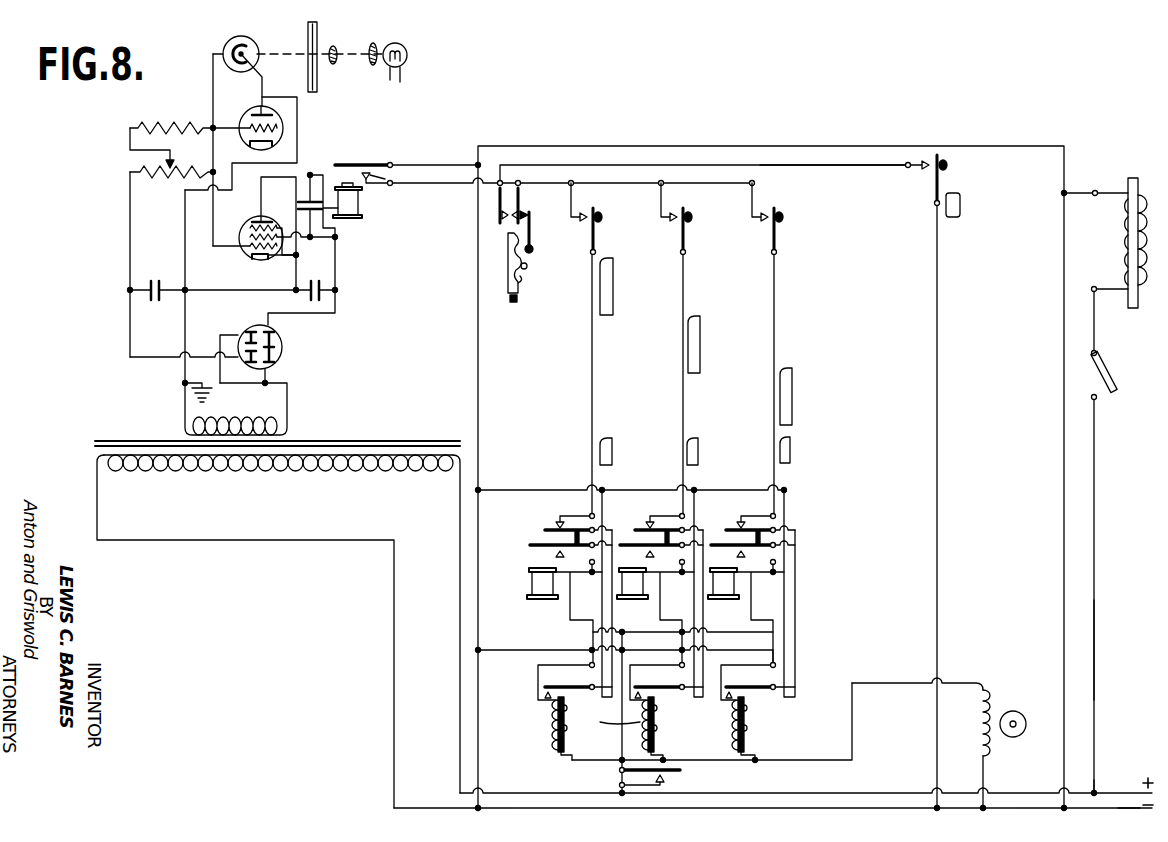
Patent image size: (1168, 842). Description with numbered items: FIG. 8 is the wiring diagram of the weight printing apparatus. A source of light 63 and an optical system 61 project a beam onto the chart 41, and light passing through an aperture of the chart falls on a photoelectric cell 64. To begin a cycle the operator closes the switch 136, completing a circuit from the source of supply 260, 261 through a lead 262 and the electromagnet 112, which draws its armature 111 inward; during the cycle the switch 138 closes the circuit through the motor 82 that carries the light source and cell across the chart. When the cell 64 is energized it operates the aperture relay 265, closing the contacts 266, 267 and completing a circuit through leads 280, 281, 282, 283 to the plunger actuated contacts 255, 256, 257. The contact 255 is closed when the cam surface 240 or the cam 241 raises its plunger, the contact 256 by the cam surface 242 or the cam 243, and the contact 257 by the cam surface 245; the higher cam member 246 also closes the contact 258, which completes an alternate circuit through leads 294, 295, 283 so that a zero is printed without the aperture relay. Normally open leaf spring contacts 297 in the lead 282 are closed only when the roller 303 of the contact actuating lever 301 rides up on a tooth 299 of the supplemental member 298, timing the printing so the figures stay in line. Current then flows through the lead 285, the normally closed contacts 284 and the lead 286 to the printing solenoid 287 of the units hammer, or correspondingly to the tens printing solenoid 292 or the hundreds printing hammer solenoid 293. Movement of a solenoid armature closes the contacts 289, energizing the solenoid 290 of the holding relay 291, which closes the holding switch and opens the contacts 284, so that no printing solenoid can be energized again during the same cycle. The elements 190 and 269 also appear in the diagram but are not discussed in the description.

The photoelectric cell 64 is at (224, 47).
The chart 41 is at (308, 35).
The optical system 61 is at (371, 65).
The source of light 63 is at (408, 55).
The relay 265 is at (360, 218).
The contact 266 is at (339, 163).
The contact 267 is at (395, 176).
The lead 281 is at (460, 172).
The lead 282 is at (450, 193).
The lead 283 is at (537, 186).
The leaf spring contacts 297 is at (505, 230).
The contact actuating lever 301 is at (532, 260).
The roller 303 is at (525, 268).
The cam 190 is at (508, 278).
The teeth 299 is at (521, 283).
The supplemental member 298 is at (513, 302).
The leaf spring contact switch 255 is at (589, 215).
The contact 256 is at (679, 215).
The contact 257 is at (771, 196).
The lead 295 is at (853, 166).
The contact 258 is at (934, 172).
The higher cam member 246 is at (960, 210).
The armature 111 is at (1126, 184).
The electromagnet 112 is at (1126, 241).
The switch 136 is at (1113, 377).
The cam surface 240 is at (613, 287).
The cam 241 is at (612, 450).
The cam surface 242 is at (700, 342).
The cam 243 is at (698, 450).
The cam surface 245 is at (792, 397).
The lead 285 is at (592, 386).
The lead 294 is at (938, 398).
The lead 280 is at (479, 582).
The normally closed contacts 284 is at (556, 520).
The lead 286 is at (612, 533).
The holding relay 291 is at (555, 553).
The solenoid 290 is at (553, 587).
The contacts 289 is at (551, 694).
The solenoid 287 is at (552, 727).
The printing solenoid 292 is at (658, 727).
The printing hammer solenoid 293 is at (748, 727).
The switch 138 is at (619, 778).
The relay coil 269 is at (1064, 676).
The motor 82 is at (1014, 711).
The lead 262 is at (1096, 665).
The source of supply 260 is at (1110, 782).
The source of supply 261 is at (1118, 808).